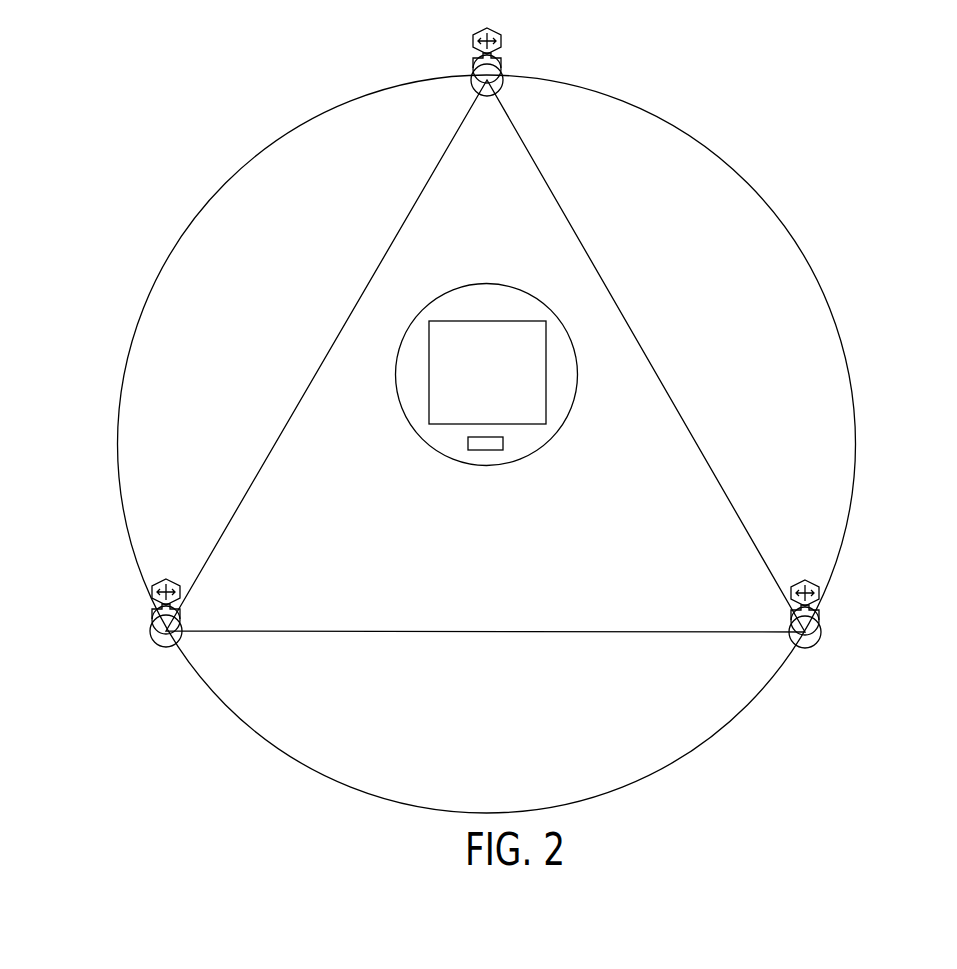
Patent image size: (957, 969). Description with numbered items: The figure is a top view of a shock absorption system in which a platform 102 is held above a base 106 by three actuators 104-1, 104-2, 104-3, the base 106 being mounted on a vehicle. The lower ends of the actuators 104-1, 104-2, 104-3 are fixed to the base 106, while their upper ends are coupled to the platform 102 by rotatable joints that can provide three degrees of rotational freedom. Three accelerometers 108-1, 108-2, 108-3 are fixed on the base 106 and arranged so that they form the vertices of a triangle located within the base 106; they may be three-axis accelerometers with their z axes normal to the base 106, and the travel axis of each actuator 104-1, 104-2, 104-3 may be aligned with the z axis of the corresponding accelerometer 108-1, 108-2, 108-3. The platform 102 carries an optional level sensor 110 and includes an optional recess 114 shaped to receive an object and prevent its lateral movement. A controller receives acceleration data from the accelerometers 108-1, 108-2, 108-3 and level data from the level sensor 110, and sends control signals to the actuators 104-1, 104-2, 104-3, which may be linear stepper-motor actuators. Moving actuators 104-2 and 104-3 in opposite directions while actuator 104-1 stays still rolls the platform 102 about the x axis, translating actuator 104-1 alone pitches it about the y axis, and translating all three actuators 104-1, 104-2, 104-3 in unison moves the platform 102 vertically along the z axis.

The platform 102 is at (505, 313).
The actuator 104-1 is at (504, 74).
The actuator 104-2 is at (822, 632).
The actuator 104-3 is at (150, 630).
The base 106 is at (698, 155).
The accelerometer 108-1 is at (501, 35).
The accelerometer 108-2 is at (818, 588).
The accelerometer 108-3 is at (155, 588).
The level sensor 110 is at (504, 442).
The recess 114 is at (505, 373).